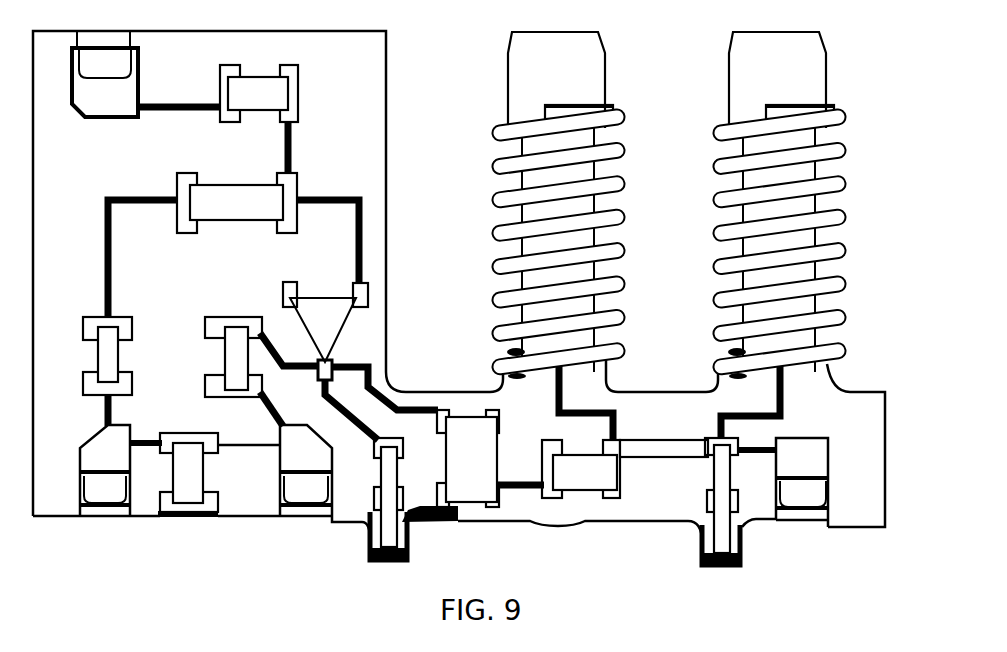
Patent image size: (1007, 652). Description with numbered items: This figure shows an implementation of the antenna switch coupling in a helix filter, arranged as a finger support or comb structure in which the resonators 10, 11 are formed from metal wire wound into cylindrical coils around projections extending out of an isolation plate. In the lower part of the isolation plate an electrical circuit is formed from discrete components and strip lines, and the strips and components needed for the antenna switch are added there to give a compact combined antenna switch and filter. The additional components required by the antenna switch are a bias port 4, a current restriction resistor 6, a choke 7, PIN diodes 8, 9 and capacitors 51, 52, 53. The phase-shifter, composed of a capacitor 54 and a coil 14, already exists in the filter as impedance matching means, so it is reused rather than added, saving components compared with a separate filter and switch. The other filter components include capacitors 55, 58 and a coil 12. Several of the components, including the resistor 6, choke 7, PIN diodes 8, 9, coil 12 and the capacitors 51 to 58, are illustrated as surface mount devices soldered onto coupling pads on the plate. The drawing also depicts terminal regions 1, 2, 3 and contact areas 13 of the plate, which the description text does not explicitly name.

The first terminal 1 is at (98, 88).
The second terminal 2 is at (817, 517).
The third terminal 3 is at (303, 510).
The bias port 4 is at (102, 510).
The current restriction resistor 6 is at (104, 362).
The choke 7 is at (238, 198).
The PIN diode 8 is at (322, 343).
The PIN diode 9 is at (467, 462).
The resonator 10 is at (476, 147).
The resonator 11 is at (866, 143).
The coil 12 is at (647, 445).
The heat sink 13 is at (204, 522).
The coil 14 is at (390, 392).
The capacitor 51 is at (195, 470).
The capacitor 52 is at (270, 88).
The capacitor 53 is at (232, 348).
The capacitor 54 is at (384, 474).
The capacitor 55 is at (583, 478).
The capacitor 58 is at (731, 470).